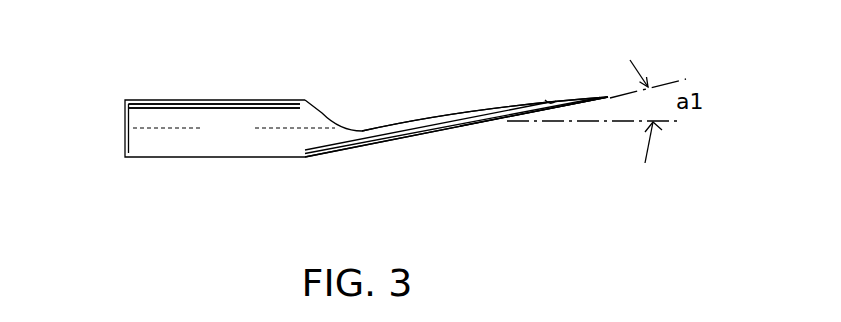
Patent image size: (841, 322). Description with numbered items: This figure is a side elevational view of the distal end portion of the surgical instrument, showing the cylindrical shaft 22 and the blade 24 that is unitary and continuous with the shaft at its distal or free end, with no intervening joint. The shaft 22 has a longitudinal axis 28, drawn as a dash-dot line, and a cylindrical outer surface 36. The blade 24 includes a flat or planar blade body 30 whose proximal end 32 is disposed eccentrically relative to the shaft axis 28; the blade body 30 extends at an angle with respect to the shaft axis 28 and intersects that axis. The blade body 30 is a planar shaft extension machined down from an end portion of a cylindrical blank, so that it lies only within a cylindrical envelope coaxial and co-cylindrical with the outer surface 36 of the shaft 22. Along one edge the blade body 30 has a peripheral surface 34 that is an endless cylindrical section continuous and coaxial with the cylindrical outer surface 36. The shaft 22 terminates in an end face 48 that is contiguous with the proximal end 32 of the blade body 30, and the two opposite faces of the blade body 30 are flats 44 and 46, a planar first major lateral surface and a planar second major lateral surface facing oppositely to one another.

The cylindrical shaft 22 is at (167, 115).
The cylindrical outer surface 36 is at (147, 108).
The end face 48 is at (323, 110).
The flat 44 is at (418, 121).
The blade body 30 is at (480, 111).
The edge or peripheral surface 34 is at (550, 97).
The proximal end 32 is at (363, 138).
The flat 46 is at (460, 125).
The blade 24 is at (505, 128).
The longitudinal axis 28 is at (575, 123).